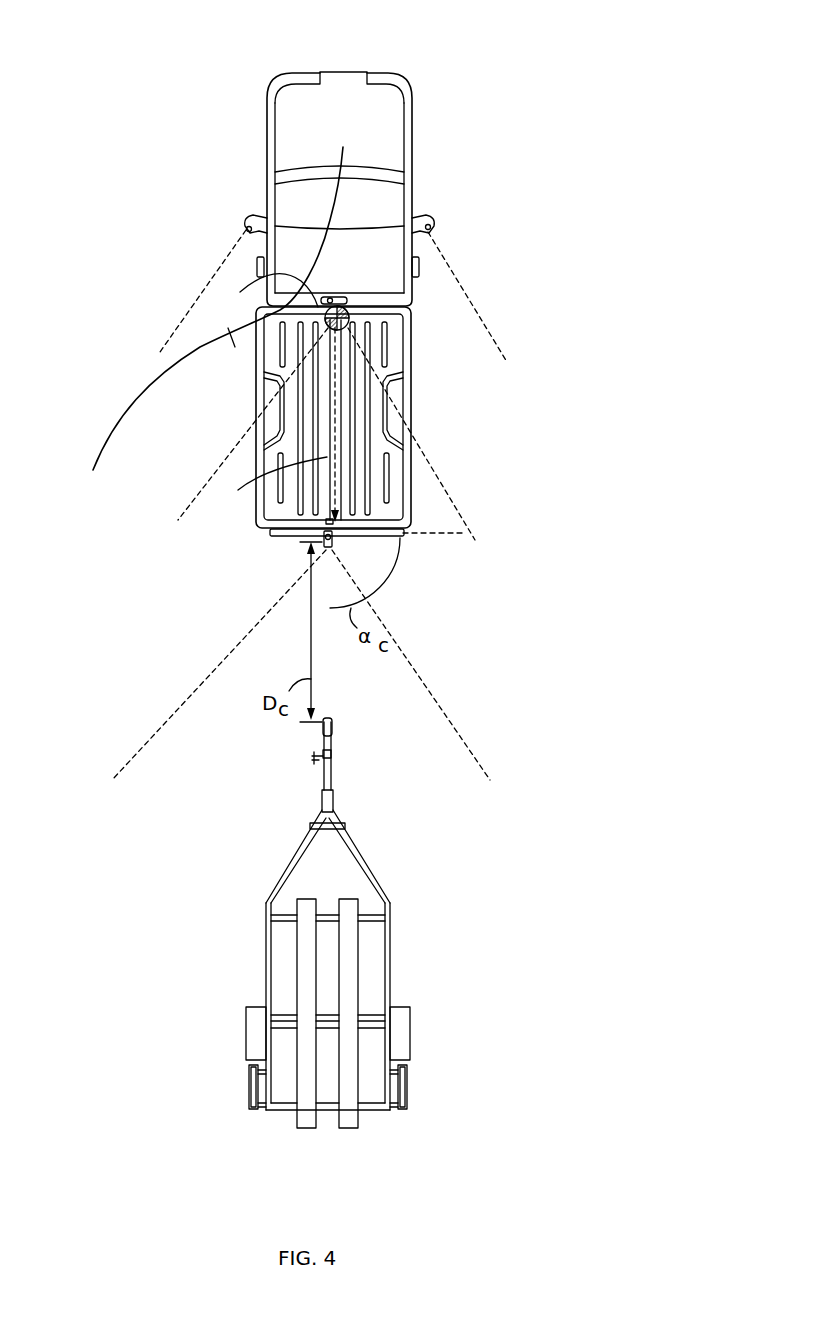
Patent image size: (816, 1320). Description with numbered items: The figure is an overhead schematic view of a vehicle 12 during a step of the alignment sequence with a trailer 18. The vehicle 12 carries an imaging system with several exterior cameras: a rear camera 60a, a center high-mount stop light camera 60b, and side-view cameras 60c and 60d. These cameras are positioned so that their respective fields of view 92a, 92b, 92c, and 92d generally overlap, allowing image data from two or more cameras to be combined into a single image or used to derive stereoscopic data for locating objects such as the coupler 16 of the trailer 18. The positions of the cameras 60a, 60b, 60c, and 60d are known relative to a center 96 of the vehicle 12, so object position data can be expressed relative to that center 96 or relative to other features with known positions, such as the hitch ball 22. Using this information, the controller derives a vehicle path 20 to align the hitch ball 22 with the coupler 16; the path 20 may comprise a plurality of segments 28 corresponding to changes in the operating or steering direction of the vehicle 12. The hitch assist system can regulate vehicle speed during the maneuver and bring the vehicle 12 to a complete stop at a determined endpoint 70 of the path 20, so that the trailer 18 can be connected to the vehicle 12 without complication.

The vehicle 12 is at (415, 40).
The coupler 16 is at (334, 723).
The trailer 18 is at (283, 874).
The vehicle path 20 is at (340, 435).
The hitch ball 22 is at (322, 540).
The segments 28 is at (145, 417).
The rear camera 60a is at (331, 523).
The center high-mount stop light camera 60b is at (337, 297).
The side-view camera 60c is at (430, 229).
The side-view camera 60d is at (244, 233).
The endpoint 70 is at (330, 522).
The field of view 92a is at (242, 645).
The field of view 92b is at (186, 515).
The field of view 92c is at (485, 323).
The field of view 92d is at (178, 331).
The center 96 is at (349, 311).